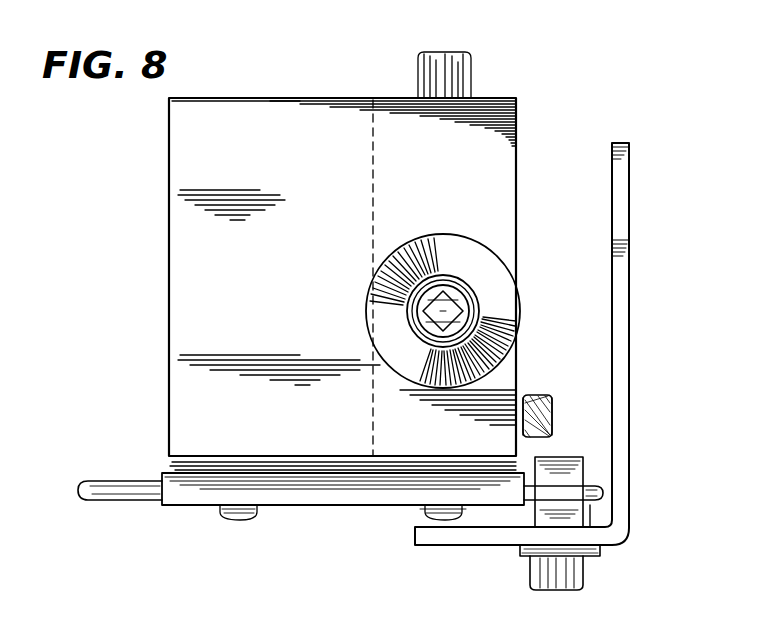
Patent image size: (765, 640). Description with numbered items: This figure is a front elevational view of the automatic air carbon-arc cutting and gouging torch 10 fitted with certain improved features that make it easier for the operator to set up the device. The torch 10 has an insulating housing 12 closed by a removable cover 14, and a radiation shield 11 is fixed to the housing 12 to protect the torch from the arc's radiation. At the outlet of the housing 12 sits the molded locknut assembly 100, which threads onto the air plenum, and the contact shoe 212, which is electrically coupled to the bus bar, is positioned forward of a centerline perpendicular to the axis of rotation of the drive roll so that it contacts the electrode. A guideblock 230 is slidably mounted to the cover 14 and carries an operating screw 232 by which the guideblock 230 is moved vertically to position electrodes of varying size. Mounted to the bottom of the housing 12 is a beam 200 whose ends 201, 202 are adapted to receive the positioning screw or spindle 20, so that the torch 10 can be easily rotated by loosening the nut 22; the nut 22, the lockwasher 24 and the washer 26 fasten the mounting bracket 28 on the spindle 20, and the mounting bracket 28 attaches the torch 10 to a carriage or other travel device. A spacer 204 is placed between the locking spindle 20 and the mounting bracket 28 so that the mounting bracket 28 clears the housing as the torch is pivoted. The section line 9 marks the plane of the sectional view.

The section line 9- 9 is at (446, 4).
The torch 10 is at (507, 94).
The radiation shield 11 is at (286, 122).
The housing 12 is at (395, 198).
The removable cover 14 is at (519, 191).
The positioning screw 20 is at (584, 460).
The nut 22 is at (578, 584).
The lockwasher 24 is at (595, 554).
The washer 26 is at (524, 549).
The mounting bracket 28 is at (630, 257).
The molded locknut assembly 100 is at (452, 258).
The beam 200 is at (338, 508).
The end 201 is at (590, 490).
The end 202 is at (118, 484).
The spacer 204 is at (590, 520).
The contact shoe 212 is at (462, 289).
The guideblock 230 is at (428, 333).
The operating screw 232 is at (538, 401).